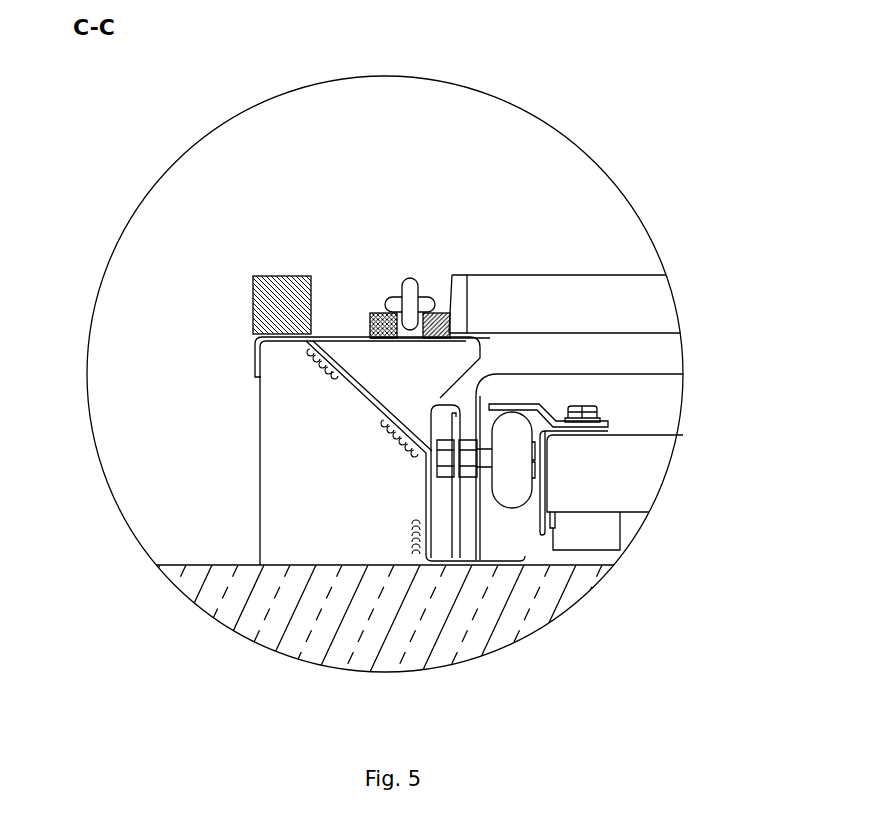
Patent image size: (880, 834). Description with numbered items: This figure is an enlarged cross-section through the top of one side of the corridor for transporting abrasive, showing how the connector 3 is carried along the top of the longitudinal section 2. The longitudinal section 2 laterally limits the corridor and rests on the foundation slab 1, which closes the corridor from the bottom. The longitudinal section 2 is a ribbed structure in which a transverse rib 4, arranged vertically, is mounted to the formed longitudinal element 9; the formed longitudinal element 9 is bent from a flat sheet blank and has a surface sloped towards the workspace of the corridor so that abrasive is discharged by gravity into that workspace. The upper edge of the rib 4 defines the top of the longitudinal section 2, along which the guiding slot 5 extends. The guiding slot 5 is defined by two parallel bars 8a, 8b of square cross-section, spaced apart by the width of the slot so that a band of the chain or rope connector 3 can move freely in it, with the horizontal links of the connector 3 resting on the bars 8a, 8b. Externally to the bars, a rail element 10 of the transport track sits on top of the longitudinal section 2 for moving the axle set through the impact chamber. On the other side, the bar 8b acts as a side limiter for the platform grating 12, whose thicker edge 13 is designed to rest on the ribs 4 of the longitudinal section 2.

The foundation slab 1 is at (468, 598).
The longitudinal section 2 is at (272, 566).
The connector 3 is at (406, 284).
The transverse rib 4 is at (412, 368).
The guiding slot 5 is at (410, 337).
The bar 8a is at (378, 322).
The bar 8b is at (442, 318).
The formed longitudinal element 9 is at (253, 374).
The rail element 10 is at (260, 293).
The platform grating 12 is at (515, 298).
The edge of the platform grating 13 is at (457, 290).